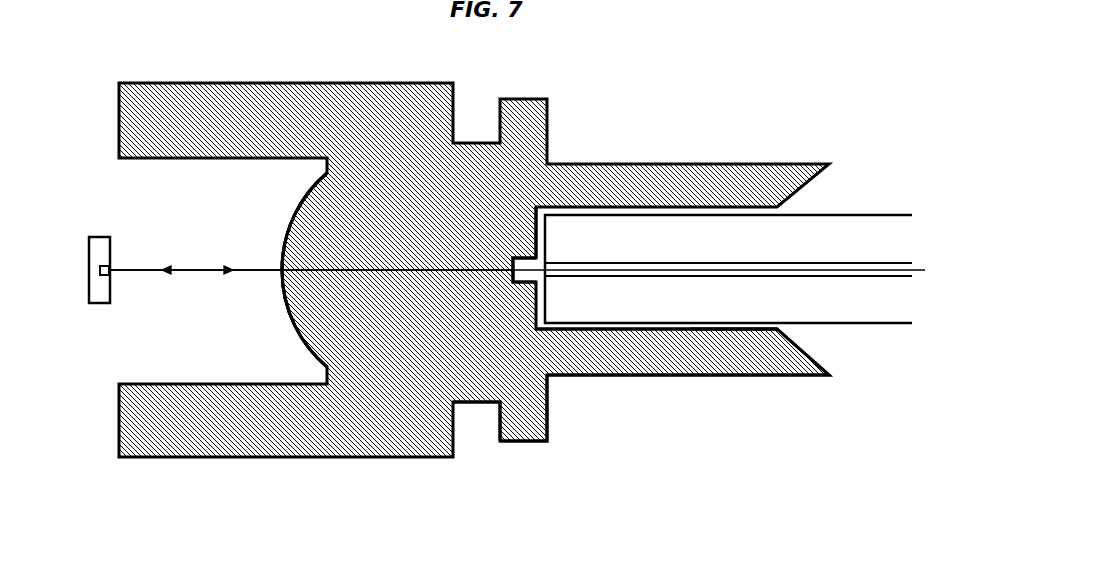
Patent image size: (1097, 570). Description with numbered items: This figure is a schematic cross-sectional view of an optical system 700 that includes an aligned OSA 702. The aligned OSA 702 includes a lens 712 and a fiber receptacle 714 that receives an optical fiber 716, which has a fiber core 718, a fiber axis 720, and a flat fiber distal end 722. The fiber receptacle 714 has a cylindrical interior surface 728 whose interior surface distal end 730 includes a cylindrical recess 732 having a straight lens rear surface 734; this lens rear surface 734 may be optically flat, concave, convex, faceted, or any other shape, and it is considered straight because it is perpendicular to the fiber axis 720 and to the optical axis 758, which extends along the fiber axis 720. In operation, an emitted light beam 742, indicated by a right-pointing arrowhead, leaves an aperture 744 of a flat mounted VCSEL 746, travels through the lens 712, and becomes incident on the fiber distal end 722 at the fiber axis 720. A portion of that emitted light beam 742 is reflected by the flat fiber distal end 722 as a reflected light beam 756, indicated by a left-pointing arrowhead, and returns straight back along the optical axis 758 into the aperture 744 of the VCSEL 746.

The optical system 700 is at (657, 76).
The aligned OSA 702 is at (385, 457).
The lens 712 is at (288, 232).
The fiber receptacle 714 is at (645, 376).
The optical fiber 716 is at (880, 325).
The fiber core 718 is at (792, 255).
The fiber axis 720 is at (840, 280).
The fiber distal end 722 is at (530, 242).
The cylindrical interior surface 728 is at (692, 328).
The interior surface distal end 730 is at (529, 310).
The cylindrical recess 732 is at (523, 290).
The lens rear surface 734 is at (505, 262).
The emitted light beam 742 is at (226, 262).
The aperture 744 is at (109, 277).
The VCSEL 746 is at (103, 237).
The reflected light beam 756 is at (184, 276).
The optical axis 758 is at (396, 284).